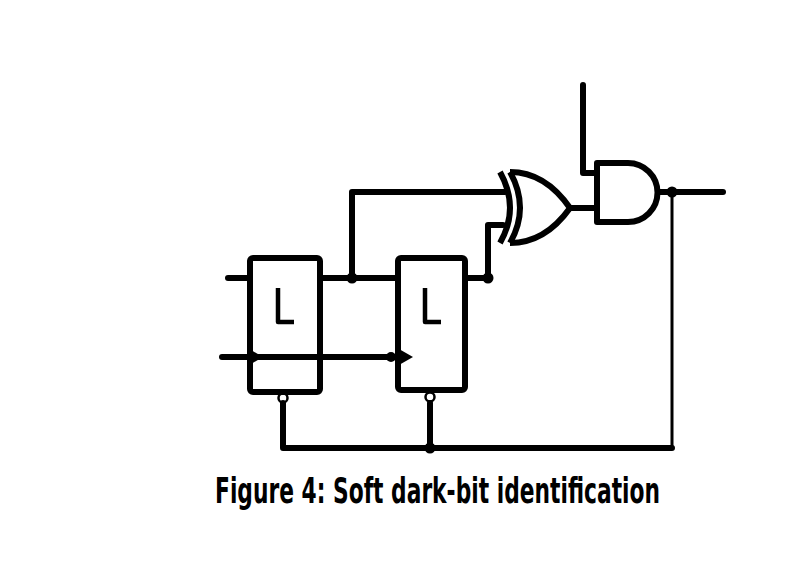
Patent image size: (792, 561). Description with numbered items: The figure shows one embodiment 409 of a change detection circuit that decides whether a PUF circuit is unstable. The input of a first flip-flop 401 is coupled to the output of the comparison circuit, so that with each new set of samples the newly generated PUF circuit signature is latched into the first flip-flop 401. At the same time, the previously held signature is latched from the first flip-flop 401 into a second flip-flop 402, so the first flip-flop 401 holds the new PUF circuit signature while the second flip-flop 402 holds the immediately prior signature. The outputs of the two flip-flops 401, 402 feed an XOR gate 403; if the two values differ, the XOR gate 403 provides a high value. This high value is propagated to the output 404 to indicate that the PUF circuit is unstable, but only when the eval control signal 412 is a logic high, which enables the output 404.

The change detection circuit embodiment 409 is at (197, 50).
The eval control signal 412 is at (584, 110).
The first flip-flop 401 is at (312, 383).
The second flip-flop 402 is at (455, 372).
The XOR gate 403 is at (537, 220).
The output 404 is at (670, 305).